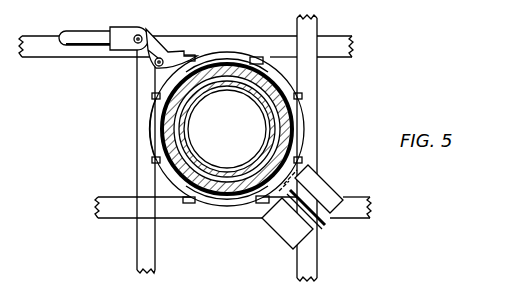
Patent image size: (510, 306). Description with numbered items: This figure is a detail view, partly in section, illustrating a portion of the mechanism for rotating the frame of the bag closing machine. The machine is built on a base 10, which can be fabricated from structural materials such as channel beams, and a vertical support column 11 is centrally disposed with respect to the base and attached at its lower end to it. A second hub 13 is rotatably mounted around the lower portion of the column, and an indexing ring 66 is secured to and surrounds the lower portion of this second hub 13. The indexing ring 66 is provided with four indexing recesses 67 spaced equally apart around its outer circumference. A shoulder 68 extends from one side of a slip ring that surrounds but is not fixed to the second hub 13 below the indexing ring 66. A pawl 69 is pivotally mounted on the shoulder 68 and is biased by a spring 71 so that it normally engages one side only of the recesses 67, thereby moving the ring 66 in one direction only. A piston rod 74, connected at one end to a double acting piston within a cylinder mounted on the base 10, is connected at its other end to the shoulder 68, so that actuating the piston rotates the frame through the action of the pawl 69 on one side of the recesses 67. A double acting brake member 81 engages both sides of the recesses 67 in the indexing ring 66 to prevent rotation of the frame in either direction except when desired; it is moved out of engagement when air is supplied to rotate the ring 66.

The base 10 is at (217, 222).
The vertical support column 11 is at (244, 133).
The second hub 13 is at (157, 133).
The indexing ring 66 is at (233, 50).
The indexing recesses 67 is at (300, 97).
The shoulder 68 is at (152, 80).
The pawl 69 is at (189, 56).
The spring 71 is at (163, 55).
The piston rod 74 is at (83, 29).
The double acting brake member 81 is at (306, 163).